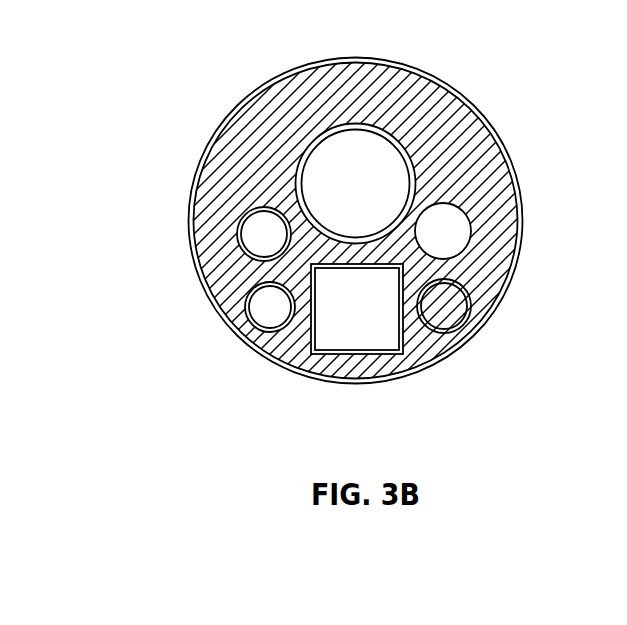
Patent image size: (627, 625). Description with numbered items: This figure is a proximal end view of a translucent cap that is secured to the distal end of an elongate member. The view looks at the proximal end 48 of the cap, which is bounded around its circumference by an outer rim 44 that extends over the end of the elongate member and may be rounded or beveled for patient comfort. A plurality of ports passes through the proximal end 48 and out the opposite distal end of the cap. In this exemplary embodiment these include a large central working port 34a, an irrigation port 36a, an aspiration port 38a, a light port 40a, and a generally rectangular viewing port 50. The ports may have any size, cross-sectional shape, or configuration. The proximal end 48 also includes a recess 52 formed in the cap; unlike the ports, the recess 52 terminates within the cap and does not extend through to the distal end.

The proximal end 48 is at (228, 120).
The outer rim 44 is at (242, 345).
The working port 34a is at (380, 157).
The irrigation port 36a is at (253, 246).
The light port 40a is at (262, 307).
The aspiration port 38a is at (475, 240).
The recess 52 is at (470, 293).
The viewing port 50 is at (363, 333).